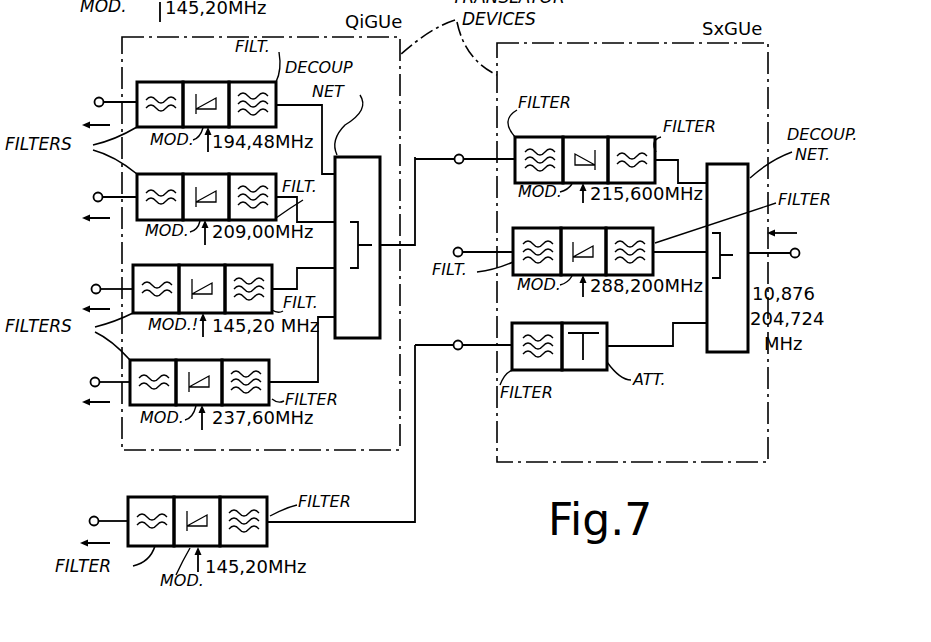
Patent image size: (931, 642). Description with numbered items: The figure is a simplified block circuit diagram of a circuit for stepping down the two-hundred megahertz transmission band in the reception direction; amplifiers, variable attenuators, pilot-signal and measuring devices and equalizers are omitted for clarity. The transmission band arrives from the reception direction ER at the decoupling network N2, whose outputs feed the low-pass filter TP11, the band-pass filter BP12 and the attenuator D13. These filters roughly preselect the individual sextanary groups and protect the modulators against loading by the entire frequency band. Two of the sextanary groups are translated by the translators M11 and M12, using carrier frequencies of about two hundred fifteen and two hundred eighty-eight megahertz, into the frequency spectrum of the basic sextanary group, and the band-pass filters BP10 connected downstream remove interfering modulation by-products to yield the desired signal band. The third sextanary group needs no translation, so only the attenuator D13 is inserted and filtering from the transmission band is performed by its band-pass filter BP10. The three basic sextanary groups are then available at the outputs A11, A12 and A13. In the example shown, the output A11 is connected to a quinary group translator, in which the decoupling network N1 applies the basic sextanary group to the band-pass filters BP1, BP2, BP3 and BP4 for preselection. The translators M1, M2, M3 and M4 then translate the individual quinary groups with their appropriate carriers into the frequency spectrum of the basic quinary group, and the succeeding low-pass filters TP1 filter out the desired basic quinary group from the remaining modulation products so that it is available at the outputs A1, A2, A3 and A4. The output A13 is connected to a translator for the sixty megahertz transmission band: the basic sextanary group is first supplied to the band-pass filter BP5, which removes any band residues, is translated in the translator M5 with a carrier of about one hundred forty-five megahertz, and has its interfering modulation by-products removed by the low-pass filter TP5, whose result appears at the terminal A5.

The output A1 is at (111, 93).
The output A2 is at (111, 186).
The output A3 is at (108, 278).
The output A4 is at (106, 371).
The input terminal A5 is at (103, 510).
The low-pass filter TP1 is at (156, 232).
The translator M1 is at (206, 93).
The band-pass filter BP1 is at (252, 93).
The translator M2 is at (206, 185).
The band-pass filter BP2 is at (252, 185).
The translator M3 is at (202, 278).
The band-pass filter BP3 is at (248, 278).
The translator M4 is at (199, 371).
The band-pass filter BP4 is at (245, 371).
The low-pass filter TP5 is at (151, 511).
The translator M5 is at (197, 511).
The band-pass filter BP5 is at (243, 511).
The decoupling network N1 is at (357, 235).
The decoupling network N2 is at (726, 245).
The output A11 is at (465, 144).
The output A12 is at (484, 235).
The output A13 is at (463, 331).
The band-pass filter BP10 is at (537, 241).
The translator M11 is at (585, 148).
The low-pass filter TP11 is at (632, 148).
The translator M12 is at (583, 240).
The band-pass filter BP12 is at (631, 240).
The attenuator D13 is at (584, 335).
The reception direction ER is at (774, 264).